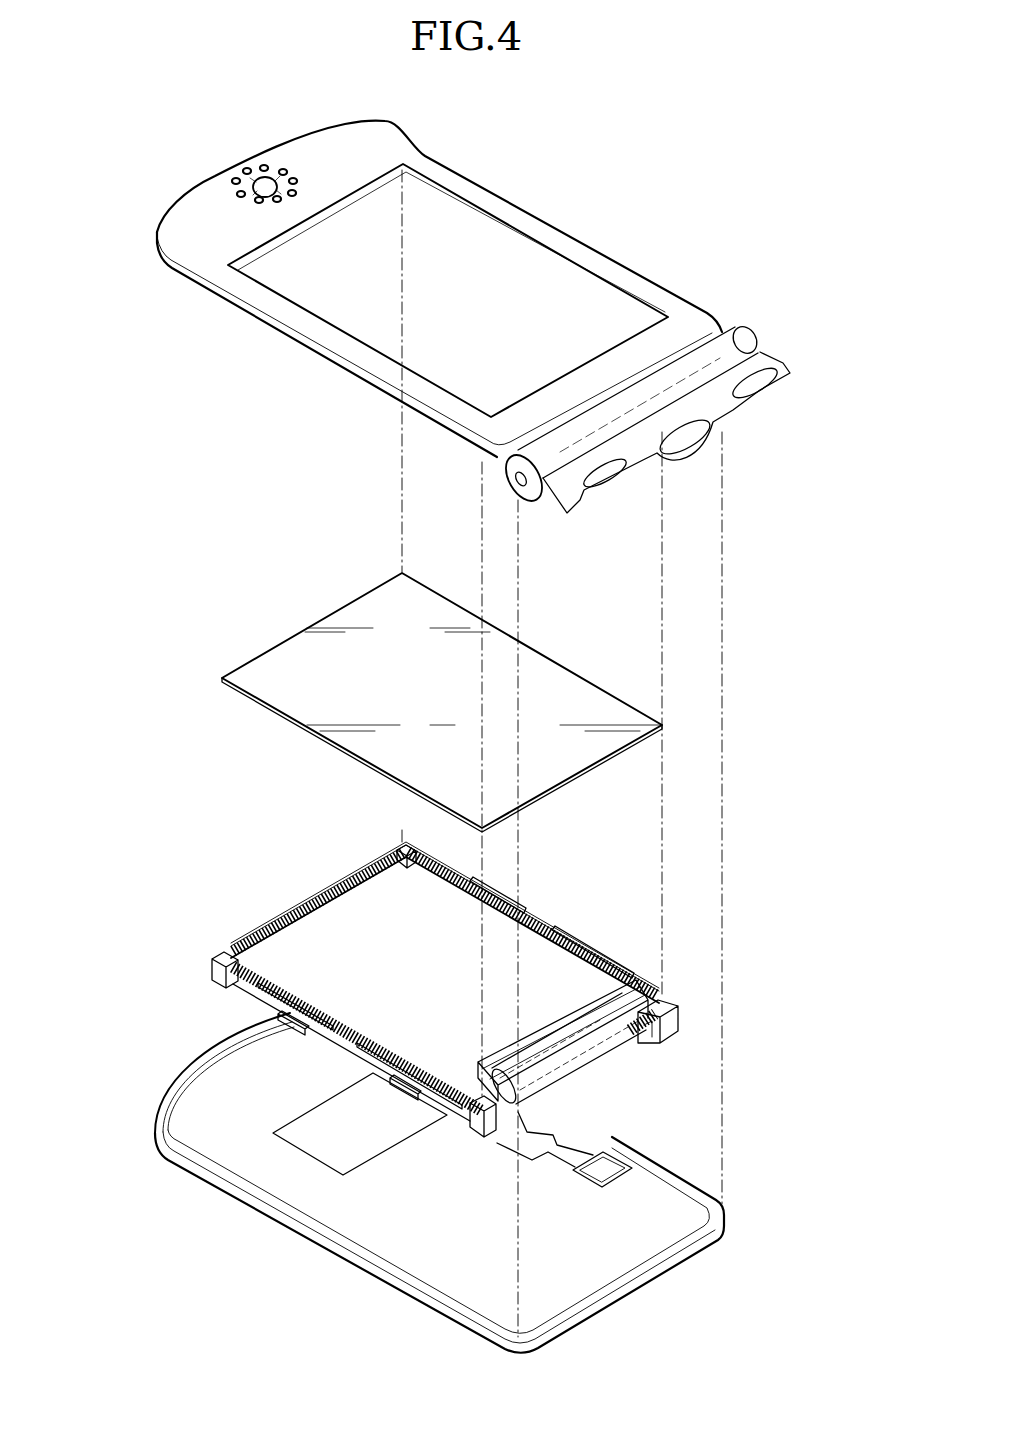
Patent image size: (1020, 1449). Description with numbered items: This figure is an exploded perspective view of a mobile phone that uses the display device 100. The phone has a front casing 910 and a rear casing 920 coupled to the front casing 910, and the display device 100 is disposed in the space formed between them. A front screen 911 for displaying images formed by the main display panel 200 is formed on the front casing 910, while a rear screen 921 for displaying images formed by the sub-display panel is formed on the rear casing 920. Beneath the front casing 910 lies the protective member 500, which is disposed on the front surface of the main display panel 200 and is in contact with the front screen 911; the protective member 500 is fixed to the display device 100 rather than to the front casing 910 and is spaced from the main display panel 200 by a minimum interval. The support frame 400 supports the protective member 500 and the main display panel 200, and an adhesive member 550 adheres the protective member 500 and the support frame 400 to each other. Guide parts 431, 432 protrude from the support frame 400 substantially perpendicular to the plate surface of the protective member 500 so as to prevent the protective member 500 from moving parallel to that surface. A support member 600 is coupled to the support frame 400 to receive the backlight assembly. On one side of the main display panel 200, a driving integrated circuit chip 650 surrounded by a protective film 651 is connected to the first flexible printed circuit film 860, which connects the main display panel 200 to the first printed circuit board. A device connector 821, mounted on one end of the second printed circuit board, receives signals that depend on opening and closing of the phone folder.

The display device 100 is at (183, 844).
The front casing 910 is at (507, 196).
The front screen 911 is at (552, 247).
The protective member 500 is at (358, 599).
The support frame 400 is at (479, 976).
The main display panel 200 is at (343, 930).
The adhesive member 550 is at (287, 915).
The support member 600 is at (352, 1052).
The guide part 431 is at (410, 850).
The guide part 432 is at (505, 902).
The driving integrated circuit chip 650 is at (590, 1007).
The protective film 651 is at (637, 988).
The first flexible printed circuit film 860 is at (580, 1070).
The device connector 821 is at (607, 1167).
The rear casing 920 is at (439, 1183).
The rear screen 921 is at (323, 1150).